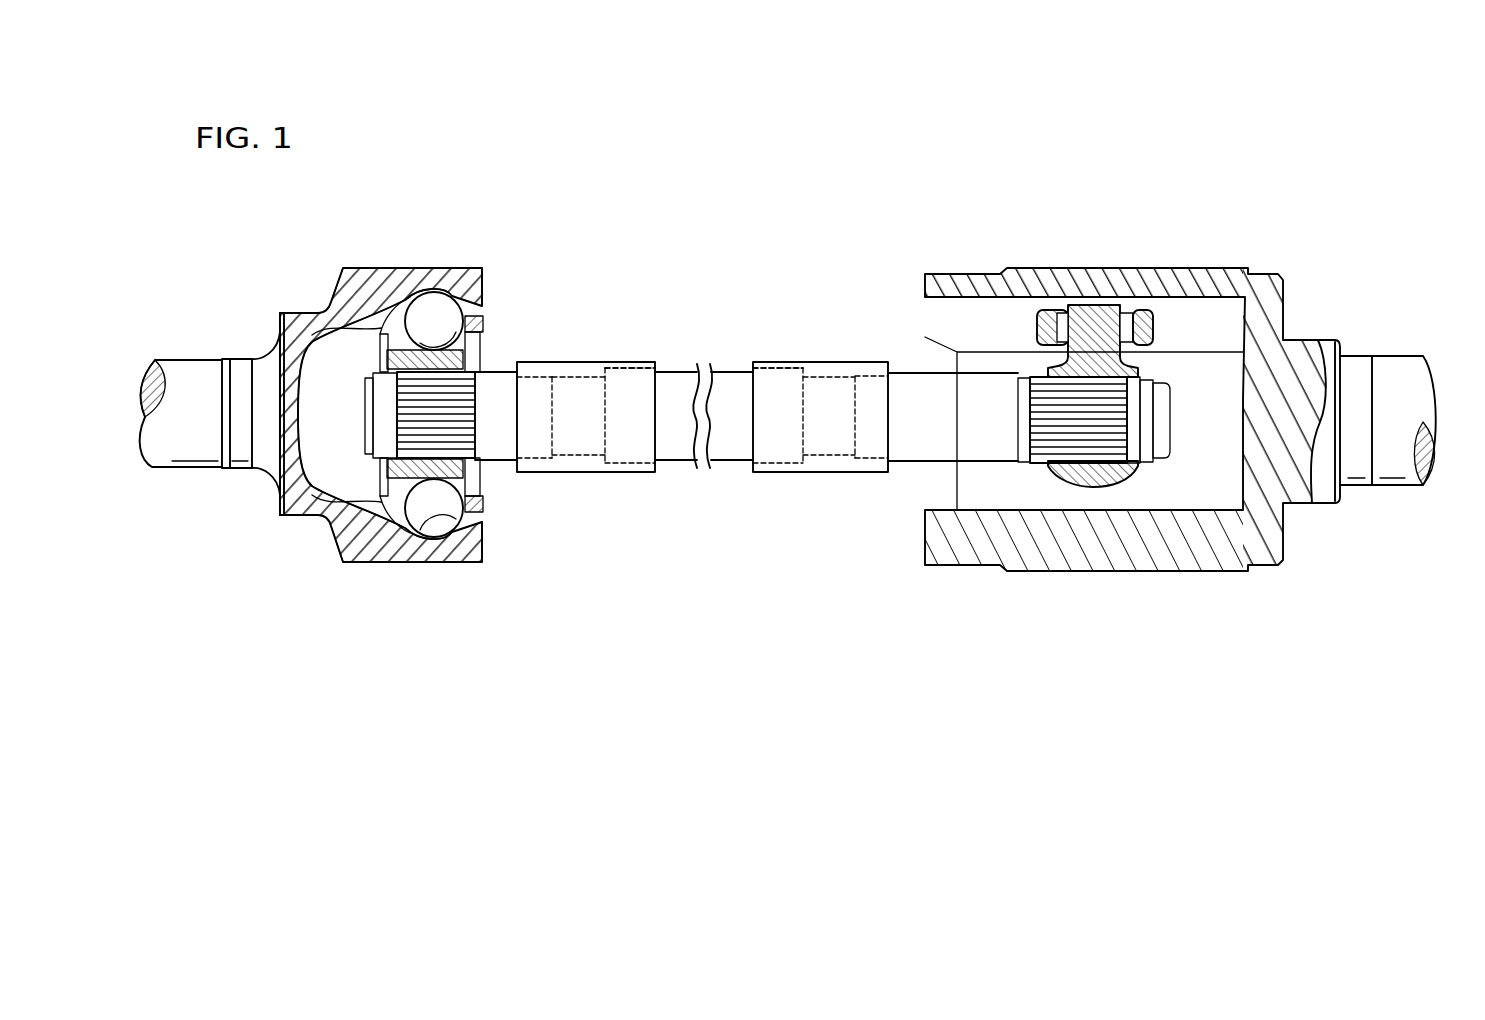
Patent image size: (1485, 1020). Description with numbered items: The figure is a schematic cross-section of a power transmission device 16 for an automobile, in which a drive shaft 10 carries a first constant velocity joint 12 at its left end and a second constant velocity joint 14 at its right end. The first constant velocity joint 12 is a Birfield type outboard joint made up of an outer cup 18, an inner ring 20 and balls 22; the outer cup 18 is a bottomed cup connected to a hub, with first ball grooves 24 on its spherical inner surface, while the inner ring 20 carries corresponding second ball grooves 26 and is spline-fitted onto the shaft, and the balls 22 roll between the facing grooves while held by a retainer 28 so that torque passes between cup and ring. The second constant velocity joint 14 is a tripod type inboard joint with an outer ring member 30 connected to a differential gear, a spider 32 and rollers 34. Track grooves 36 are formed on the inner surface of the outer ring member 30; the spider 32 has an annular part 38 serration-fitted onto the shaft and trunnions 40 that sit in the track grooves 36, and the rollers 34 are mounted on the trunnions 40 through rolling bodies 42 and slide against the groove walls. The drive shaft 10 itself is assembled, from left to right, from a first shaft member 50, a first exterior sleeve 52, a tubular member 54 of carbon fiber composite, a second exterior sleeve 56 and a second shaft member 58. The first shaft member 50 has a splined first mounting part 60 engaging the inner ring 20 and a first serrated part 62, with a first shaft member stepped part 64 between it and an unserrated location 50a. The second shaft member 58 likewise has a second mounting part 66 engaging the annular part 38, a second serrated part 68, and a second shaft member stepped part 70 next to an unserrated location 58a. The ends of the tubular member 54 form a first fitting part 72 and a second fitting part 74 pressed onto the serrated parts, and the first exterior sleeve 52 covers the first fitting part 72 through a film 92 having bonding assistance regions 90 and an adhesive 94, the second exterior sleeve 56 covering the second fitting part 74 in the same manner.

The drive shaft 10 is at (703, 329).
The first constant velocity joint 12 is at (456, 214).
The second constant velocity joint 14 is at (1052, 206).
The power transmission device 16 is at (1279, 182).
The outer cup 18 is at (371, 266).
The inner ring 20 is at (402, 352).
The balls 22 is at (431, 307).
The first ball grooves 24 is at (473, 537).
The second ball grooves 26 is at (399, 483).
The retainer 28 is at (477, 317).
The outer ring member 30 is at (1027, 271).
The spider 32 is at (1048, 232).
The rollers 34 is at (1146, 320).
The track grooves 36 is at (1196, 300).
The annular part 38 is at (1098, 367).
The trunnions 40 is at (1080, 318).
The rolling bodies 42 is at (1125, 317).
The first shaft member 50 is at (502, 376).
The location where serrations are not formed 50a is at (537, 461).
The first exterior sleeve 52 is at (567, 361).
The tubular member 54 is at (683, 369).
The second exterior sleeve 56 is at (838, 361).
The second shaft member 58 is at (905, 368).
The location where serrations are not formed 58a is at (875, 461).
The first mounting part 60 is at (428, 436).
The first serrated part 62 is at (578, 446).
The first shaft member stepped part 64 is at (556, 461).
The second mounting part 66 is at (1089, 447).
The second serrated part 68 is at (830, 446).
The second shaft member stepped part 70 is at (855, 461).
The first fitting part 72 is at (623, 465).
The second fitting part 74 is at (782, 465).
The bonding assistance regions 90 is at (717, 320).
The film 92 is at (616, 368).
The adhesive 94 is at (627, 367).